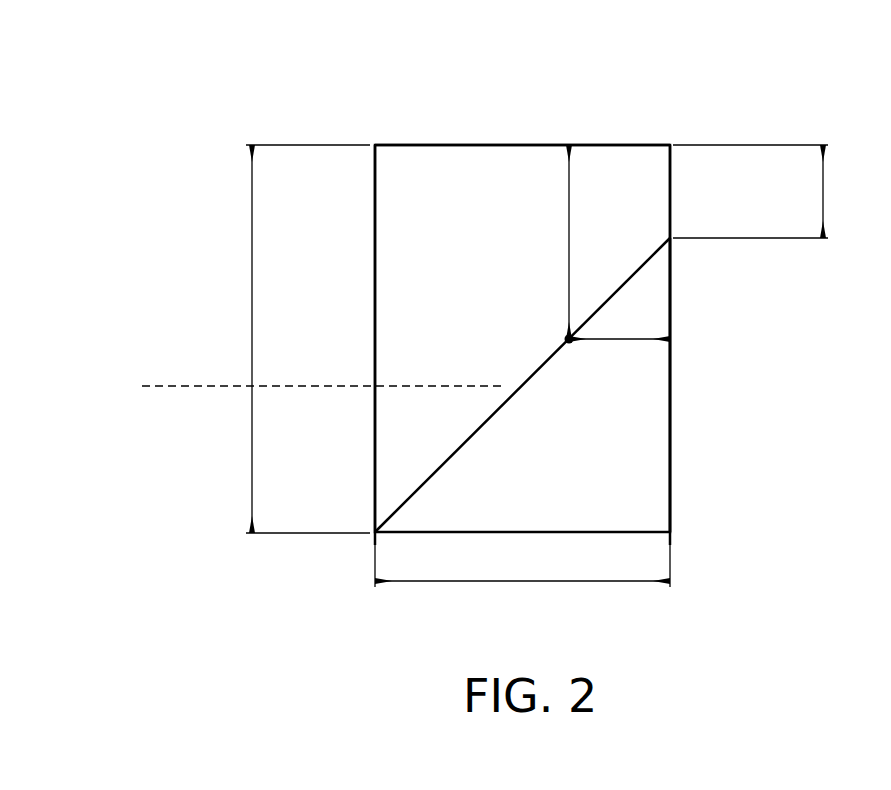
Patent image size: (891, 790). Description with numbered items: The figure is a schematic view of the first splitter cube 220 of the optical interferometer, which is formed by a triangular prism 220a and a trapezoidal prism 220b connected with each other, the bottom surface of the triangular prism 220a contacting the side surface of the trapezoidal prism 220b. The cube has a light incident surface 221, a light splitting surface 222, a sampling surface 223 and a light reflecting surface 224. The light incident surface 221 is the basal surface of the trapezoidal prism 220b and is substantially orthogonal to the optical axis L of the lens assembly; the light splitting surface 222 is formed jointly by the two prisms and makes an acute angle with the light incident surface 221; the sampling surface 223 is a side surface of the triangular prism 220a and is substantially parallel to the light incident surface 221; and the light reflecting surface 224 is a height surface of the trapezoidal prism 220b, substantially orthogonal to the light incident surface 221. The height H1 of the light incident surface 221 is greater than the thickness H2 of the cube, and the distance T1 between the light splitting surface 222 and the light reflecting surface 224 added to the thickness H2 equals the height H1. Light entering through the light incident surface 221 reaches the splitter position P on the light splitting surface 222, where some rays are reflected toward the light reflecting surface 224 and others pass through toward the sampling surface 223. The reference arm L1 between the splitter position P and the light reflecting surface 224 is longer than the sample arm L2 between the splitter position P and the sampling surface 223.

The first splitter cube 220 is at (413, 54).
The triangular prism 220a is at (673, 358).
The trapezoidal prism 220b is at (673, 192).
The light incident surface 221 is at (375, 428).
The light splitting surface 222 is at (525, 387).
The sampling surface 223 is at (672, 447).
The light reflecting surface 224 is at (585, 144).
The splitter position P is at (574, 346).
The optical axis L is at (172, 385).
The height of the light incident surface H1 is at (292, 339).
The thickness of the first splitter cube H2 is at (522, 574).
The distance between light splitting surface and light reflecting surface T1 is at (765, 191).
The reference arm L1 is at (552, 242).
The sample arm L2 is at (619, 354).